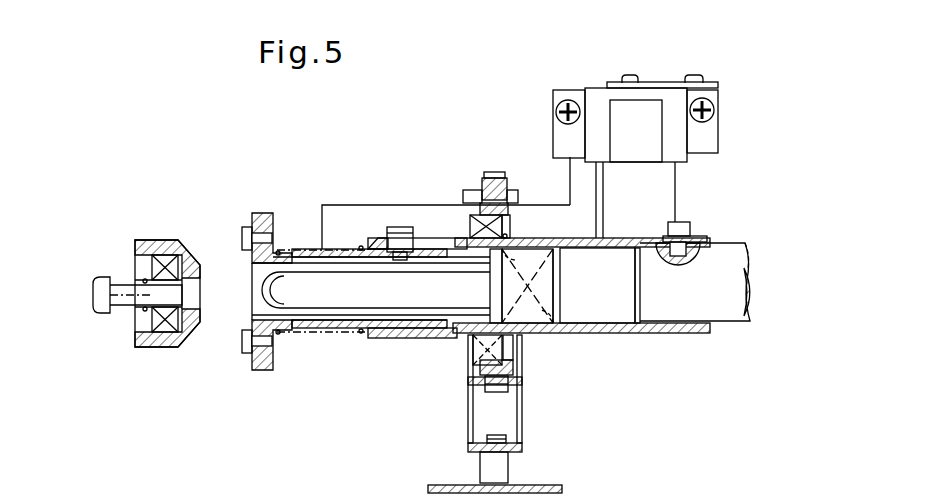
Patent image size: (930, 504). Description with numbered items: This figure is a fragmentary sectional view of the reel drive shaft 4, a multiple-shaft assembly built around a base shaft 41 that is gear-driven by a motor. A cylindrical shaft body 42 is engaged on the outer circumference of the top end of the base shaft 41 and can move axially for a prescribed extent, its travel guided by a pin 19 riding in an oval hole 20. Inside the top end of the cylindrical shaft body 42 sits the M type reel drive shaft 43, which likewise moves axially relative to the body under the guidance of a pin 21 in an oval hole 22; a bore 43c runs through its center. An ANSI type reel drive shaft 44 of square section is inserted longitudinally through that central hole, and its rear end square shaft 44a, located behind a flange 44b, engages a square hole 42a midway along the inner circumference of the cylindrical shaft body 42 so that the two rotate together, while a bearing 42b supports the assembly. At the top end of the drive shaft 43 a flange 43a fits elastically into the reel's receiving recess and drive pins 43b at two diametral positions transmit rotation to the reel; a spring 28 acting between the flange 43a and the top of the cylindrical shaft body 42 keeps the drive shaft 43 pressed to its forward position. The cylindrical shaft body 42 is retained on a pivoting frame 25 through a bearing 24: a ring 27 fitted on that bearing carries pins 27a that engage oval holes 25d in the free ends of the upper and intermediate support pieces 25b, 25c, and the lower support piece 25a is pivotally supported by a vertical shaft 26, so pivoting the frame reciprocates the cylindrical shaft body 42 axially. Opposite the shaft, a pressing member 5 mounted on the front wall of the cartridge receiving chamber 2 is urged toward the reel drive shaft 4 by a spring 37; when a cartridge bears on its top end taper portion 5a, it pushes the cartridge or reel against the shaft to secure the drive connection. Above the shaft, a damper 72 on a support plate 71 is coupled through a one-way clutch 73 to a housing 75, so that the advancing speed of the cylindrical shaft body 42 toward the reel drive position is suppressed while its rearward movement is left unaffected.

The cartridge receiving chamber 2 is at (212, 340).
The reel drive shaft 4 is at (592, 331).
The pressing member 5 is at (150, 241).
The top end taper portion 5a is at (196, 333).
The pin 19 is at (688, 222).
The oval hole 20 is at (640, 248).
The pin 21 is at (380, 236).
The oval hole 22 is at (440, 238).
The bearing 24 is at (470, 349).
The pivoting frame 25 is at (526, 415).
The lower support piece 25a is at (470, 437).
The upper support piece 25b is at (508, 190).
The intermediate support piece 25c is at (470, 388).
The oval hole 25d is at (497, 175).
The vertical shaft 26 is at (505, 470).
The ring 27 is at (512, 204).
The pin 27a is at (488, 178).
The spring 28 is at (325, 333).
The spring 37 is at (124, 310).
The base shaft 41 is at (731, 320).
The cylindrical shaft body 42 is at (628, 335).
The square hole 42a is at (563, 333).
The upper bearing 42b is at (518, 262).
The M type reel drive shaft 43 is at (338, 248).
The flange 43a is at (254, 213).
The drive pin 43b is at (242, 238).
The bore 43c is at (456, 263).
The ANSI type reel drive shaft 44 is at (313, 280).
The rear end square shaft 44a is at (555, 272).
The flange 44b is at (456, 337).
The support plate 71 is at (400, 205).
The damper 72 is at (652, 105).
The one-way clutch 73 is at (660, 190).
The housing 75 is at (677, 177).